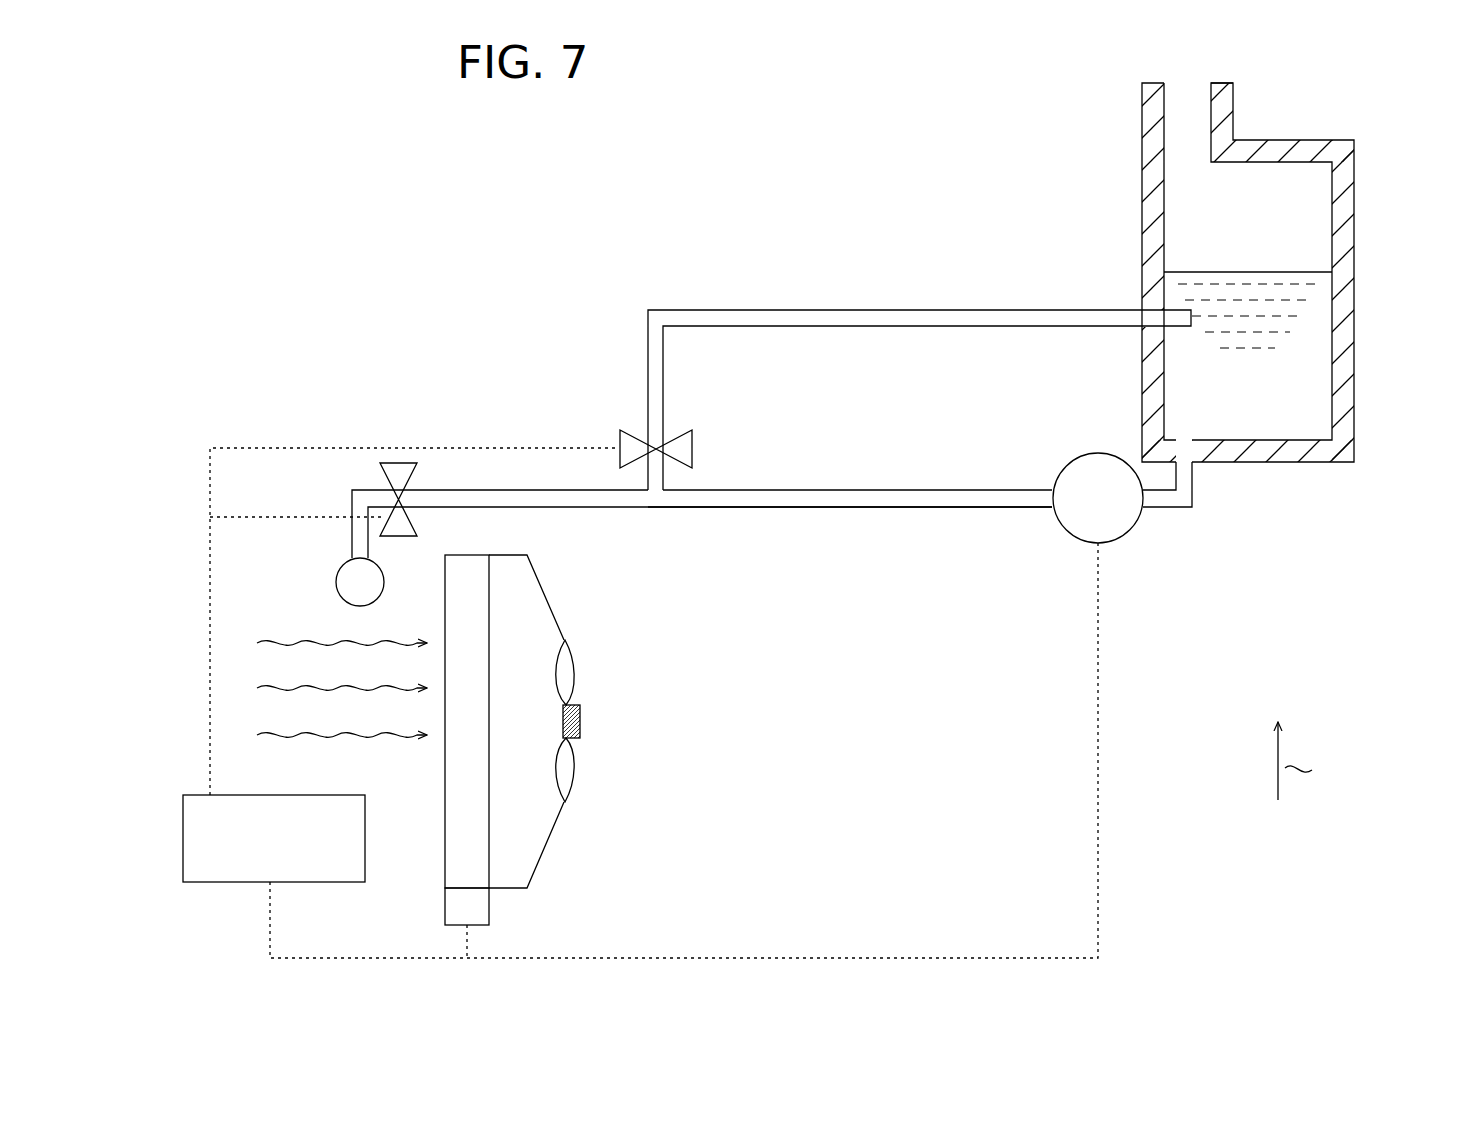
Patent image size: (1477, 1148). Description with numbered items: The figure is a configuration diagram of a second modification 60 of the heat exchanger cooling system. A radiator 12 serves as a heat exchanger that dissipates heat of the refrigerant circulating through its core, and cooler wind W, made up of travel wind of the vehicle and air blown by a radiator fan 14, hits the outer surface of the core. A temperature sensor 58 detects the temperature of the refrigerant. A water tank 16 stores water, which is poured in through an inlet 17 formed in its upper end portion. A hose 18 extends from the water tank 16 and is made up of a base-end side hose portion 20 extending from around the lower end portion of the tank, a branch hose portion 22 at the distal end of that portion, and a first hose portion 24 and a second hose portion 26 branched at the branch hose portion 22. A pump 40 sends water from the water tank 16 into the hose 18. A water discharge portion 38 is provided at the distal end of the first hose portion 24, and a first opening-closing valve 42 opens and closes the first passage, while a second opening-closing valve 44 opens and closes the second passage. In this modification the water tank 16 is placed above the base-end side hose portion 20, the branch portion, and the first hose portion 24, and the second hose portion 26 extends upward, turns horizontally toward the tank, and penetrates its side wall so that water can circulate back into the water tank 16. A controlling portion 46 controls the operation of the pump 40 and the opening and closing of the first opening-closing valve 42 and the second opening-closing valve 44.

The second modification 60 is at (728, 122).
The water tank 16 is at (1355, 222).
The inlet 17 is at (1211, 128).
The second hose portion 26 is at (868, 310).
The second opening-closing valve 44 is at (636, 430).
The base-end side hose portion 20 is at (926, 490).
The hose 18 is at (818, 508).
The branch hose portion 22 is at (657, 508).
The first hose portion 24 is at (567, 508).
The first opening-closing valve 42 is at (380, 468).
The pump 40 is at (1098, 453).
The water discharge portion 38 is at (337, 585).
The radiator 12 is at (445, 862).
The temperature sensor 58 is at (492, 905).
The radiator fan 14 is at (582, 720).
The cooler wind W is at (370, 738).
The controlling portion 46 is at (183, 845).